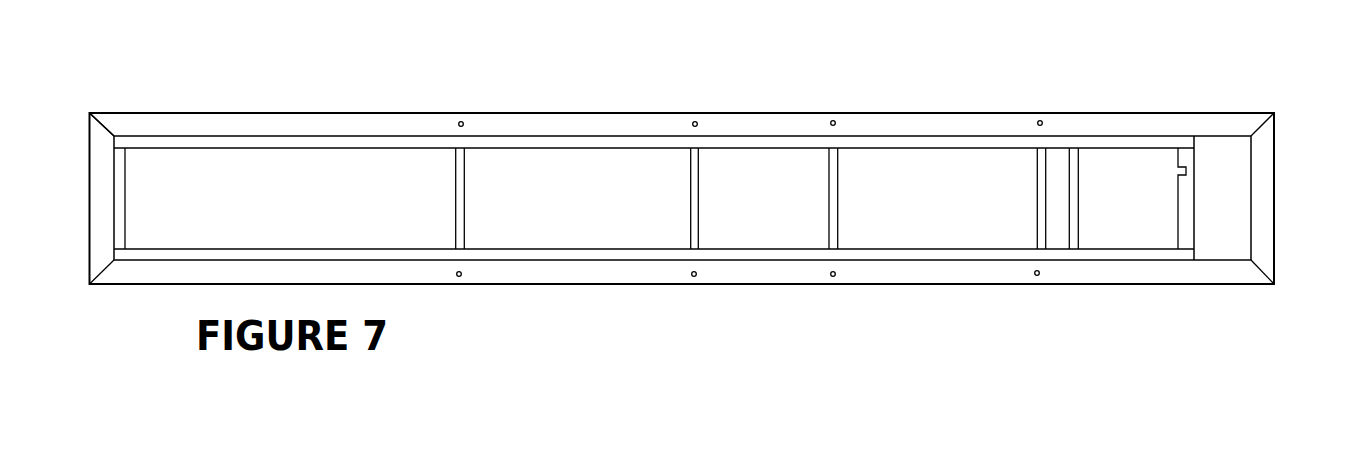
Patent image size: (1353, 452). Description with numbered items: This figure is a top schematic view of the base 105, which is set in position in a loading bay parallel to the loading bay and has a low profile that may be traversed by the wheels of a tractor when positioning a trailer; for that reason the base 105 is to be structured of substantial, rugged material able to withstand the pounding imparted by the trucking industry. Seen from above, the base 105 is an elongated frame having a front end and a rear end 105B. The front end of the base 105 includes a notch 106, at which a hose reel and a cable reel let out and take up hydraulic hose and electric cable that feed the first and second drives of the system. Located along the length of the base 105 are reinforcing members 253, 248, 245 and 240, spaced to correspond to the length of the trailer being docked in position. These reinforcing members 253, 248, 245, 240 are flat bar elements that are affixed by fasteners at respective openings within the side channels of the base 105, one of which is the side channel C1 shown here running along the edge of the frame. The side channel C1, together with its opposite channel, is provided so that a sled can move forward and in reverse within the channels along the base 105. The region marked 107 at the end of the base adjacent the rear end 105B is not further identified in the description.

The base 105 is at (262, 128).
The rear end 105B is at (98, 136).
The reinforcing member 240 is at (461, 163).
The reinforcing member 245 is at (695, 163).
The reinforcing member 248 is at (835, 163).
The reinforcing member 253 is at (1039, 159).
The side channel C1 is at (1154, 138).
The notch 106 is at (1180, 217).
The end compartment 107 is at (1233, 238).